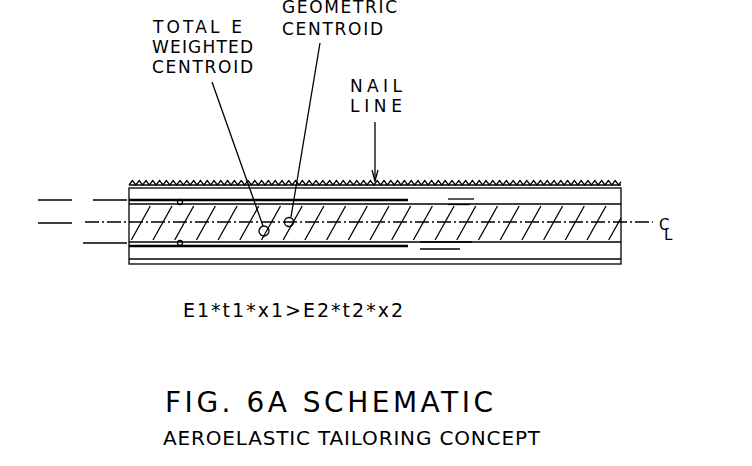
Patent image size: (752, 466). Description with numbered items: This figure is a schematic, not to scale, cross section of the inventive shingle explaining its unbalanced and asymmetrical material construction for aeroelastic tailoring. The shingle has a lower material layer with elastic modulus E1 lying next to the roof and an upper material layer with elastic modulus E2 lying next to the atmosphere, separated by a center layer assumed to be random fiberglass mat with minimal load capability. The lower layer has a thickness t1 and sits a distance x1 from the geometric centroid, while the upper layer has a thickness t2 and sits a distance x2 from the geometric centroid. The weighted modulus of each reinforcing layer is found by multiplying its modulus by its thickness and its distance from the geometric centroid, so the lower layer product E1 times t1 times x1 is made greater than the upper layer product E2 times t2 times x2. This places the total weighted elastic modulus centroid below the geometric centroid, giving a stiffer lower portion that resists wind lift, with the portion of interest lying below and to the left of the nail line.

The elastic modulus of lower material layer E1 is at (179, 245).
The elastic modulus of upper material layer E2 is at (179, 200).
The thickness of lower layer t1 is at (443, 212).
The thickness of upper layer t2 is at (458, 223).
The distance of lower layer from geometric centroid x1 is at (83, 193).
The distance of upper layer from geometric centroid x2 is at (53, 252).